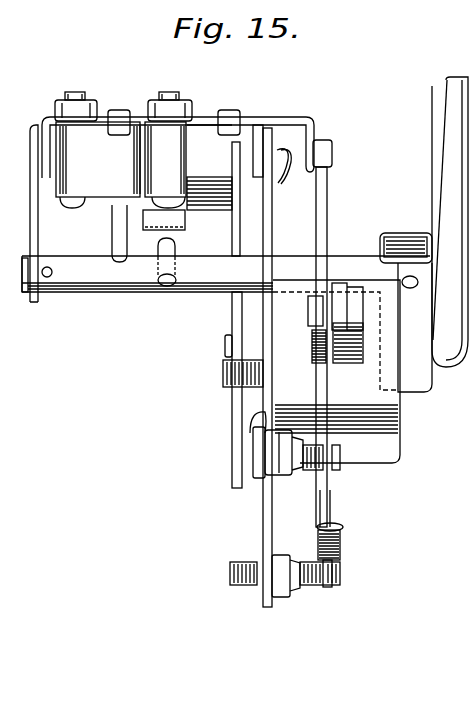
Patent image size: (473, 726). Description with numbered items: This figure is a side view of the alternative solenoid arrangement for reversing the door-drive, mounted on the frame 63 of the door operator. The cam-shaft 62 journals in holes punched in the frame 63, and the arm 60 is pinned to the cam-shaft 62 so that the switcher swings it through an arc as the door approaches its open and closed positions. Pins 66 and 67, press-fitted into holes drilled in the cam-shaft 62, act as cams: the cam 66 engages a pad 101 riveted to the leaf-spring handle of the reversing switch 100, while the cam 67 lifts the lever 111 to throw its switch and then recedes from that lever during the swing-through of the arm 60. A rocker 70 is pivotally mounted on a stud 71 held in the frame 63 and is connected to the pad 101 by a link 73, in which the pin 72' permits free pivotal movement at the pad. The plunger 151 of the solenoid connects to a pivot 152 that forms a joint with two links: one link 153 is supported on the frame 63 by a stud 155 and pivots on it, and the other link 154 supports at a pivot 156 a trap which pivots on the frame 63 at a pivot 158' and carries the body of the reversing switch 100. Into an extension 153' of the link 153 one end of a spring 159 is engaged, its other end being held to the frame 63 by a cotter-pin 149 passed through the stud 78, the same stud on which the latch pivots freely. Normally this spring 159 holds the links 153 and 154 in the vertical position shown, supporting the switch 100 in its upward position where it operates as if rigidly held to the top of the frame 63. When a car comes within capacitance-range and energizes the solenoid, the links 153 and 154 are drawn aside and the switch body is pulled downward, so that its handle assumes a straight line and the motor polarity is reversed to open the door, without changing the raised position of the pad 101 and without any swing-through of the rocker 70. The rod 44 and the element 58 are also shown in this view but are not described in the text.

The hook arm 44 is at (447, 118).
The side plate 58 is at (32, 142).
The arm 60 is at (405, 229).
The cam-shaft 62 is at (80, 286).
The frame 63 is at (262, 511).
The pin 66 is at (112, 228).
The pin 67 is at (180, 243).
The rocker 70 is at (231, 432).
The stud 71 is at (222, 368).
The pin 72' is at (205, 346).
The link 73 is at (236, 234).
The stud 78 is at (234, 588).
The reversing switch 100 is at (122, 170).
The pad 101 is at (198, 154).
The lever 111 is at (175, 220).
The cotter-pin 149 is at (323, 585).
The plunger 151 is at (345, 282).
The pivot 152 is at (310, 306).
The link 153 is at (351, 504).
The extension 153' is at (307, 535).
The link 154 is at (328, 210).
The stud 155 is at (352, 447).
The pivot 156 is at (333, 150).
The pivot 158' is at (296, 179).
The spring 159 is at (341, 549).